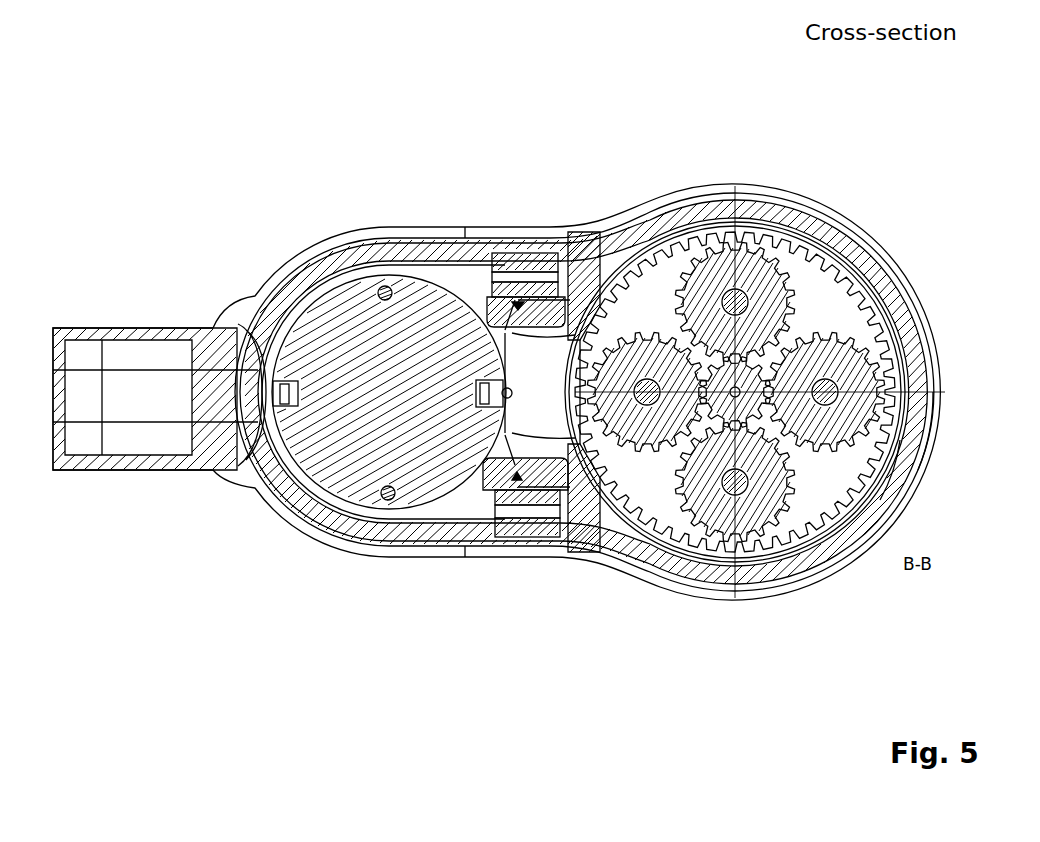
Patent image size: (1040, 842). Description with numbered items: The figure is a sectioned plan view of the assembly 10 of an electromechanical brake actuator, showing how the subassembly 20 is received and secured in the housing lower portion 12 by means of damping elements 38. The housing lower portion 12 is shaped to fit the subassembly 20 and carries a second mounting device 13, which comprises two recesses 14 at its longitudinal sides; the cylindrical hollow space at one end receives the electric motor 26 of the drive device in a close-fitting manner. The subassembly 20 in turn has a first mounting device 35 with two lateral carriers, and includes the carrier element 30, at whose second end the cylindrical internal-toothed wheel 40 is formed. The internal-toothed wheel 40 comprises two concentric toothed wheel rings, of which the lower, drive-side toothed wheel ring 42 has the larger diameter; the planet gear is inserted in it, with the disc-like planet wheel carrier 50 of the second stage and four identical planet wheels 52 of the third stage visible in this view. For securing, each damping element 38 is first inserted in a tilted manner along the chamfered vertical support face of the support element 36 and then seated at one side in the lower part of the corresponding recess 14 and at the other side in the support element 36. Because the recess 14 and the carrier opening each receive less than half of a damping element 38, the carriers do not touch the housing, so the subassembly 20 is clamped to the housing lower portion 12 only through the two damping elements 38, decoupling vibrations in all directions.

The assembly 10 is at (465, 779).
The housing lower portion 12 is at (417, 233).
The second mounting device 13 is at (762, 240).
The recess 14 is at (535, 250).
The subassembly 20 is at (550, 391).
The electric motor 26 is at (310, 262).
The carrier element 30 is at (527, 430).
The first mounting device 35 is at (517, 473).
The support element 36 is at (481, 296).
The damping element 38 is at (497, 250).
The internal-toothed wheel 40 is at (808, 503).
The toothed wheel ring 42 is at (770, 548).
The planet wheel carrier 50 is at (875, 480).
The planet wheels 52 is at (893, 397).